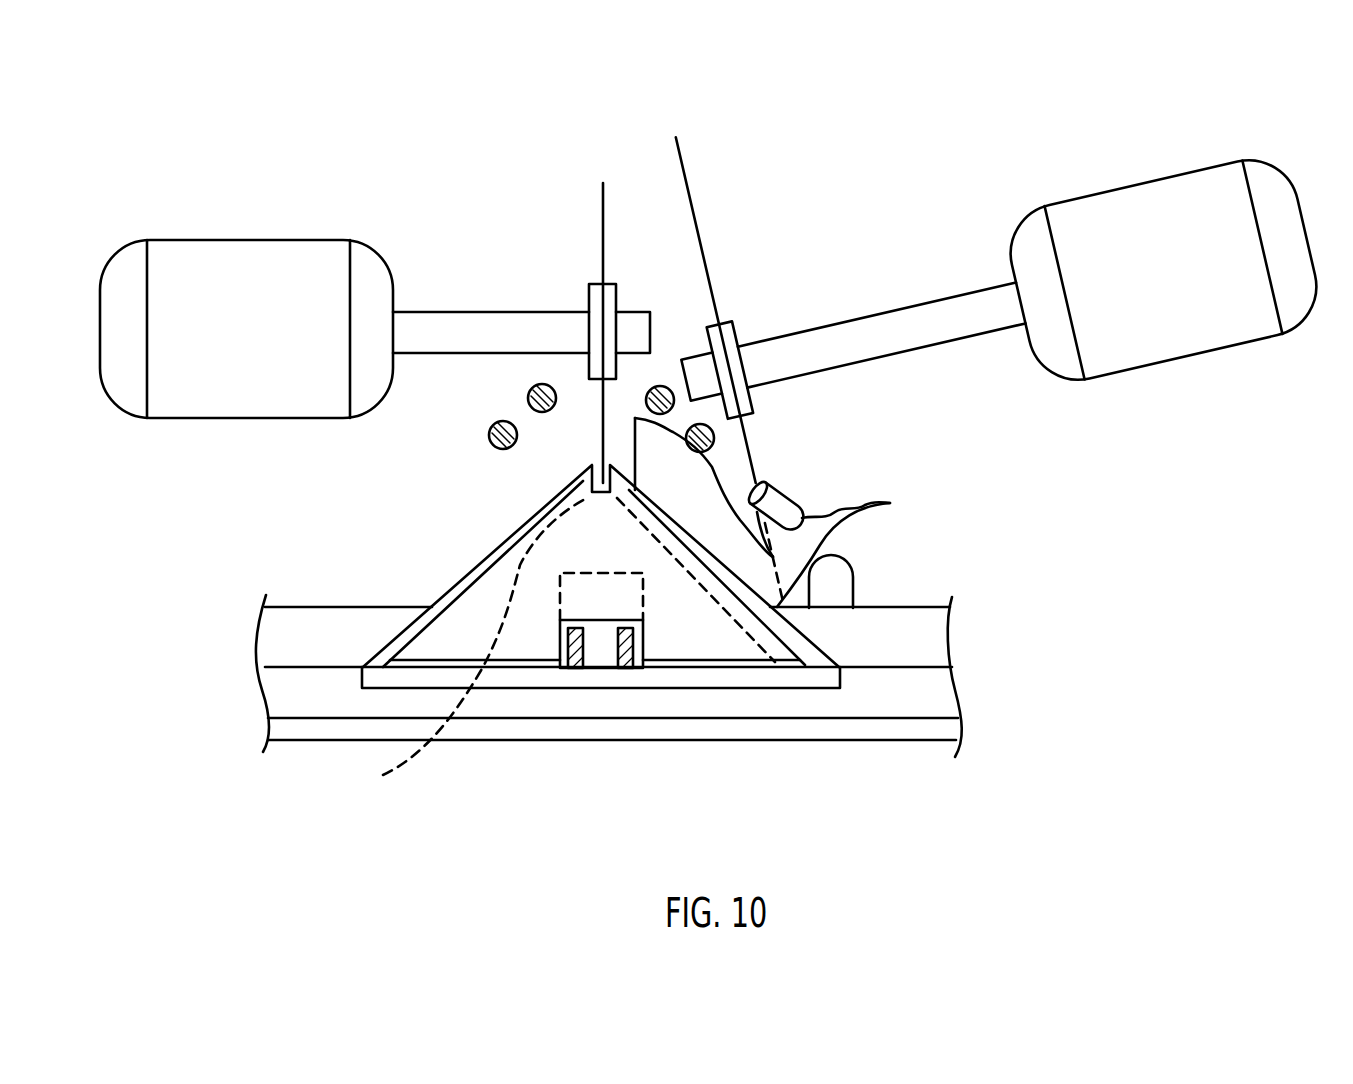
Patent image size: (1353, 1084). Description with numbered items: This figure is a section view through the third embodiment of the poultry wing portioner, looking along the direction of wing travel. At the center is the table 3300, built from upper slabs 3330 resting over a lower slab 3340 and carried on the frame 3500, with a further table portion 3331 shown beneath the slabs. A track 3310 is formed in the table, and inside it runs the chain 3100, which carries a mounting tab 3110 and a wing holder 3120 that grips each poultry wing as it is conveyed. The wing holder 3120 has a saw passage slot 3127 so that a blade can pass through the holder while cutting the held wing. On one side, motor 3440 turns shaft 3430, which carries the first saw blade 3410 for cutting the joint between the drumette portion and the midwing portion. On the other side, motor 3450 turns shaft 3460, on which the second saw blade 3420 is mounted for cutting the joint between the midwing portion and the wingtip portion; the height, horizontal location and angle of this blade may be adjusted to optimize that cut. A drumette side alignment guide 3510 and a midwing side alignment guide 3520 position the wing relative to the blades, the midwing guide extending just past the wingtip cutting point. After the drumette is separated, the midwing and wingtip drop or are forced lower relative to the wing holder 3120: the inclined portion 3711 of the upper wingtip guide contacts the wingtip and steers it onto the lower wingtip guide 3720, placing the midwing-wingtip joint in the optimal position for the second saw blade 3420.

The chain 3100 is at (583, 622).
The mounting tab 3110 is at (543, 651).
The wing holder 3120 is at (660, 668).
The saw passage slot 3127 is at (590, 478).
The table 3300 is at (933, 607).
The track 3310 is at (457, 597).
The upper slabs 3330 is at (275, 638).
The base block 3331 is at (820, 667).
The lower slab 3340 is at (938, 695).
The first saw blade 3410 is at (600, 220).
The second saw blade 3420 is at (677, 150).
The shaft 3430 is at (447, 312).
The motor 3440 is at (247, 240).
The motor 3450 is at (1163, 173).
The shaft 3460 is at (882, 315).
The frame 3500 is at (943, 730).
The drumette side alignment guide 3510 is at (542, 384).
The midwing side alignment guide 3520 is at (668, 388).
The inclined portion of upper wingtip alignment guide 3711 is at (802, 507).
The lower wingtip alignment guide 3720 is at (850, 556).